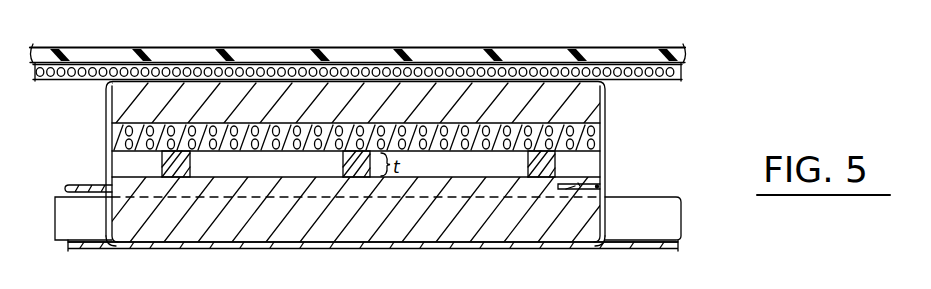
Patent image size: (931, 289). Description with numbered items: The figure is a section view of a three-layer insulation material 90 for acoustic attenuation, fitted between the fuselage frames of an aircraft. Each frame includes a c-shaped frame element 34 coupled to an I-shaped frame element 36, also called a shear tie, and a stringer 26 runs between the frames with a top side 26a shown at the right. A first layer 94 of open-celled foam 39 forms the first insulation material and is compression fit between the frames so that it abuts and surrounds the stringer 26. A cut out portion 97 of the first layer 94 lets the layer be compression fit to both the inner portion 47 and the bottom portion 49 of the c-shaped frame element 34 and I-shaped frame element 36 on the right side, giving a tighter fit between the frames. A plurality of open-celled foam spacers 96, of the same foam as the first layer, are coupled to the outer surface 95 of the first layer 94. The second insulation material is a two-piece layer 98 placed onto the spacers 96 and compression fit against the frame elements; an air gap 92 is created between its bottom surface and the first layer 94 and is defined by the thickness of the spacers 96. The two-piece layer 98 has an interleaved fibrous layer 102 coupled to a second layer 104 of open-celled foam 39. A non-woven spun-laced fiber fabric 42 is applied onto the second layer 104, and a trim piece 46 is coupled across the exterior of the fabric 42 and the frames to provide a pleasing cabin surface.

The stringer 26 is at (55, 211).
The top side of stringer 26a is at (670, 230).
The c-shaped frame element 34 is at (110, 112).
The I-shaped frame element 36 is at (112, 213).
The open-celled foam 39 is at (273, 116).
The non-woven spun-laced fiber fabric 42 is at (186, 66).
The trim piece 46 is at (84, 56).
The inner portion of c-shaped frame element 47 is at (578, 183).
The bottom portion 49 is at (568, 191).
The three-layer insulation material 90 is at (714, 115).
The air gap 92 is at (307, 166).
The first layer 94 is at (176, 230).
The outer surface of first layer 95 is at (447, 177).
The open-celled foam spacers 96 is at (361, 163).
The cut out portion 97 is at (578, 192).
The two-piece layer 98 is at (612, 112).
The interleaved fibrous layer 102 is at (112, 139).
The second layer of open-celled foam 104 is at (128, 99).